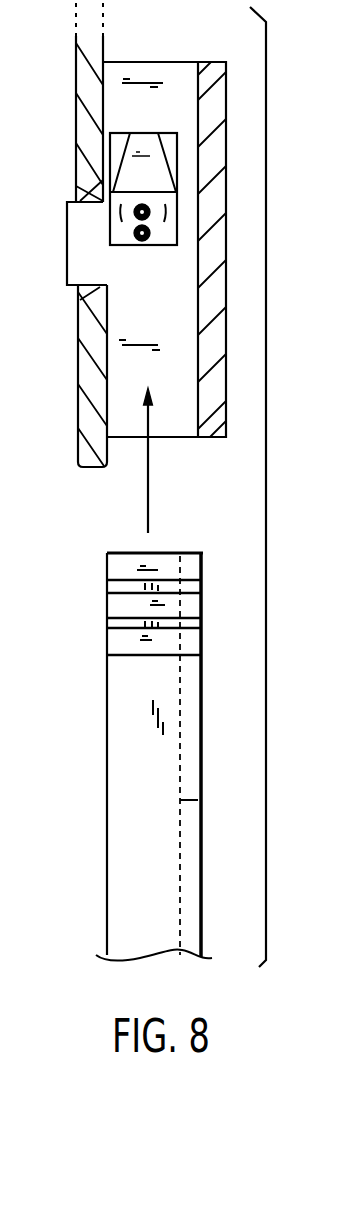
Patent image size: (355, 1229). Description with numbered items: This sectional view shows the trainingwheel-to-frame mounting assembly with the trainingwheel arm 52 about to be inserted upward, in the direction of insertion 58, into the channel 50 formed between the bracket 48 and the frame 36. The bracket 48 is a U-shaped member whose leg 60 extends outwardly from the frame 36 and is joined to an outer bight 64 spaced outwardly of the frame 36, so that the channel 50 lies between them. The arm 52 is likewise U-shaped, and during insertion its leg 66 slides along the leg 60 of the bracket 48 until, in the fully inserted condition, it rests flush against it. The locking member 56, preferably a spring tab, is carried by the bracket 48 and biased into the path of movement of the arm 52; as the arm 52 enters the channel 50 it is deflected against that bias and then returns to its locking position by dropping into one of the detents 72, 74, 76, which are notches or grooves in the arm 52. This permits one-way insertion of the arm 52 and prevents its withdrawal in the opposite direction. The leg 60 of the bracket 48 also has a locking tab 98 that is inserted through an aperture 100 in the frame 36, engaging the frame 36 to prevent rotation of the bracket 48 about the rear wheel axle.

The frame 36 is at (87, 85).
The bracket 48 is at (186, 62).
The channel 50 is at (157, 70).
The arm 52 is at (107, 743).
The locking member 56 is at (142, 140).
The direction of insertion 58 is at (152, 471).
The leg 60 is at (132, 427).
The outer bight 64 is at (217, 142).
The leg 66 is at (165, 682).
The detent 72 is at (115, 633).
The detent 74 is at (117, 598).
The detent 76 is at (114, 563).
The locking tab 98 is at (67, 252).
The aperture 100 is at (92, 283).